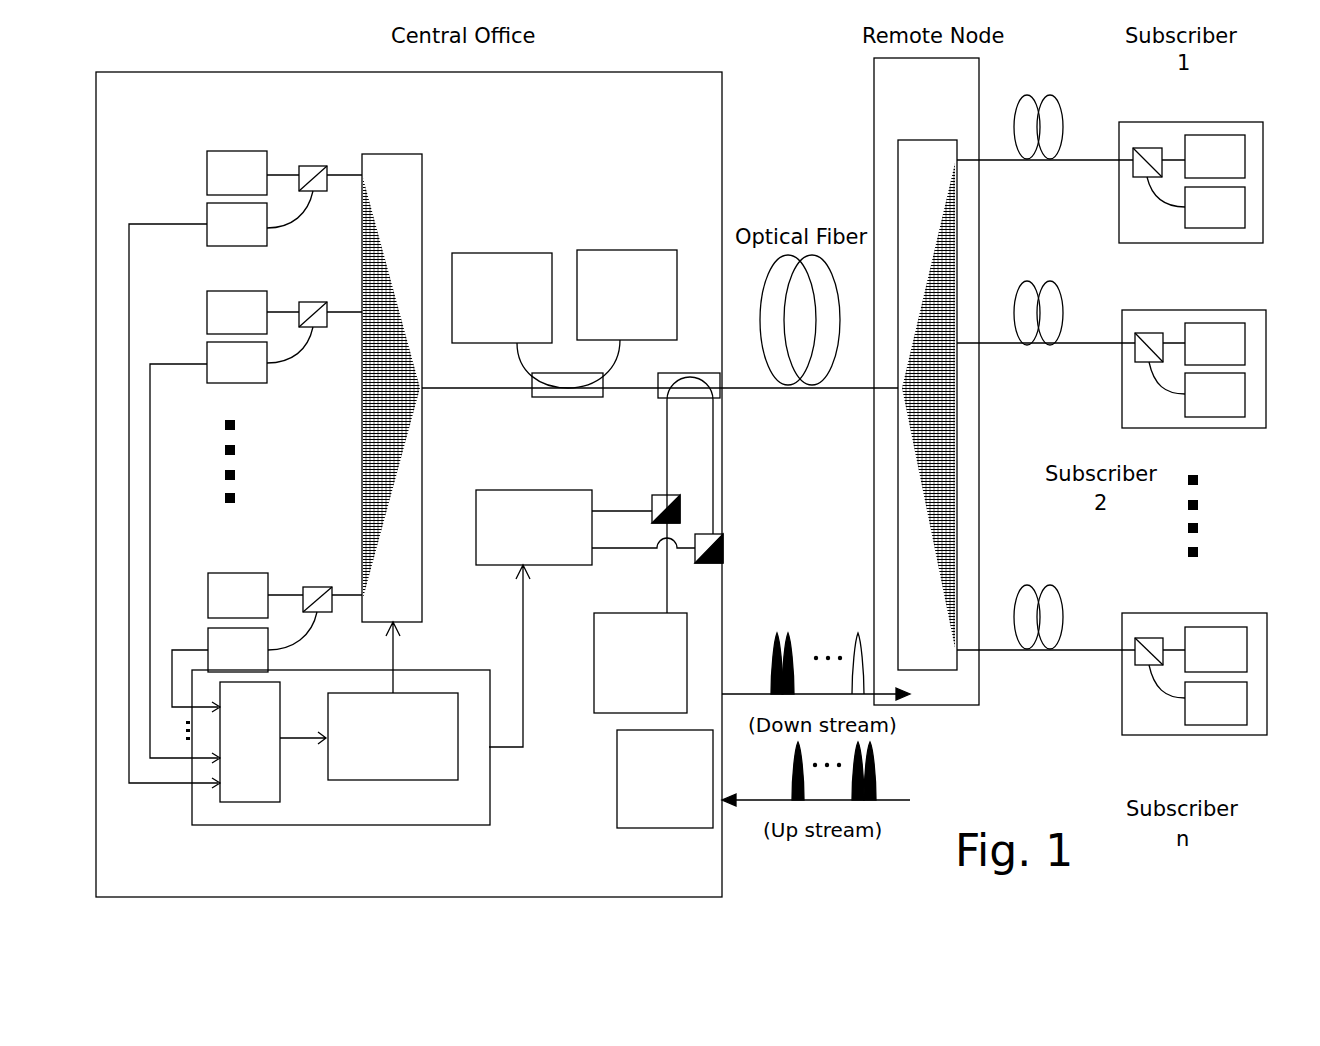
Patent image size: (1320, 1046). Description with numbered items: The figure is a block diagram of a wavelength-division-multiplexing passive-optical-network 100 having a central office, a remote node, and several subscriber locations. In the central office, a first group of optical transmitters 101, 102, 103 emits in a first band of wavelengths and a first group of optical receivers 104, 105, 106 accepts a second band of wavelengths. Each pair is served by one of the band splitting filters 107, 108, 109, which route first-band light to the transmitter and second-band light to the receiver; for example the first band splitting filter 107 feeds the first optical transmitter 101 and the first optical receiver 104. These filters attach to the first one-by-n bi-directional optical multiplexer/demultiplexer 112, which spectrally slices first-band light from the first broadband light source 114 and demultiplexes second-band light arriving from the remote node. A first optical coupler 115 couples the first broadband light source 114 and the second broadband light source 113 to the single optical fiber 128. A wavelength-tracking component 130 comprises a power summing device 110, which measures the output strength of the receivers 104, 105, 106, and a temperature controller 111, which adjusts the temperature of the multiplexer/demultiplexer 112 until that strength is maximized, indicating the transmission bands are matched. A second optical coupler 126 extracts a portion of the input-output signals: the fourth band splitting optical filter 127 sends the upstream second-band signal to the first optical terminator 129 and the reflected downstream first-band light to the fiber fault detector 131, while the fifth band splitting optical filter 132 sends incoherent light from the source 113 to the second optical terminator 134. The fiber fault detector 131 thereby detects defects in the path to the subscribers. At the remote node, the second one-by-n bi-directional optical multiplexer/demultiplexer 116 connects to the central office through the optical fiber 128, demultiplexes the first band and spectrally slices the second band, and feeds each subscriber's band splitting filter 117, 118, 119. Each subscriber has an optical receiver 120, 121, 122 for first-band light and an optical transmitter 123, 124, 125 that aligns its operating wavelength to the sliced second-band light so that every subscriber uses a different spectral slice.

The wavelength-division-multiplexing passive-optical-network 100 is at (1047, 715).
The first optical transmitter 101 is at (222, 151).
The optical transmitter 102 is at (207, 306).
The optical transmitter 103 is at (222, 573).
The first optical receiver 104 is at (207, 212).
The optical receiver 105 is at (248, 383).
The optical receiver 106 is at (208, 634).
The first band splitting filter 107 is at (312, 166).
The band splitting filter 108 is at (312, 302).
The band splitting filter 109 is at (316, 587).
The power summing device 110 is at (282, 802).
The temperature controller 111 is at (462, 668).
The first 1×n bi-directional optical multiplexer/demultiplexer 112 is at (418, 154).
The second broadband light source 113 is at (480, 248).
The first broadband light source 114 is at (604, 246).
The first optical coupler 115 is at (532, 402).
The second 1×n bi-directional optical multiplexer/demultiplexer 116 is at (912, 140).
The band splitting filter 117 is at (1142, 148).
The band splitting filter 118 is at (1135, 358).
The band splitting filter 119 is at (1146, 638).
The optical receiver 120 is at (1230, 135).
The optical receiver 121 is at (1245, 326).
The optical receiver 122 is at (1234, 628).
The optical transmitter 123 is at (1198, 228).
The optical transmitter 124 is at (1228, 417).
The optical transmitter 125 is at (1215, 725).
The second optical coupler 126 is at (690, 373).
The fourth band splitting optical filter 127 is at (648, 495).
The optical fiber 128 is at (748, 393).
The first optical terminator 129 is at (594, 663).
The wavelength-tracking component 130 is at (500, 764).
The fiber fault detector 131 is at (476, 558).
The fifth band splitting optical filter 132 is at (723, 545).
The second optical terminator 134 is at (617, 778).